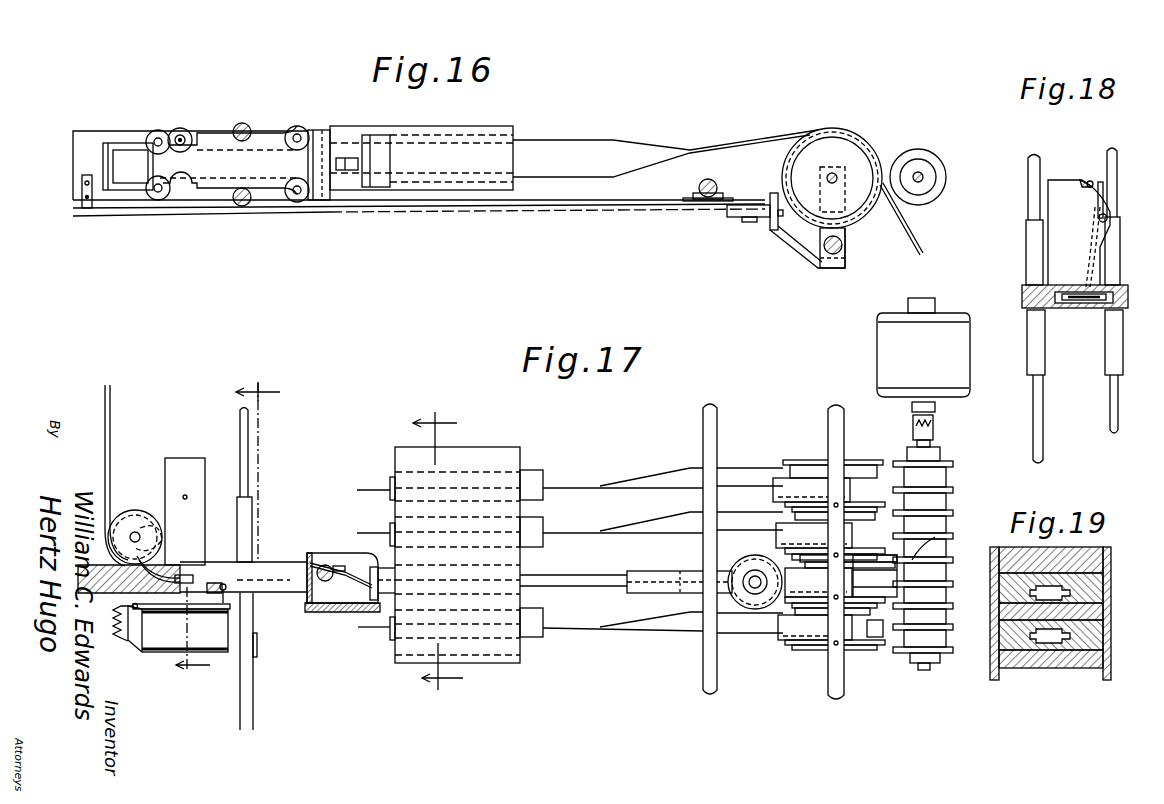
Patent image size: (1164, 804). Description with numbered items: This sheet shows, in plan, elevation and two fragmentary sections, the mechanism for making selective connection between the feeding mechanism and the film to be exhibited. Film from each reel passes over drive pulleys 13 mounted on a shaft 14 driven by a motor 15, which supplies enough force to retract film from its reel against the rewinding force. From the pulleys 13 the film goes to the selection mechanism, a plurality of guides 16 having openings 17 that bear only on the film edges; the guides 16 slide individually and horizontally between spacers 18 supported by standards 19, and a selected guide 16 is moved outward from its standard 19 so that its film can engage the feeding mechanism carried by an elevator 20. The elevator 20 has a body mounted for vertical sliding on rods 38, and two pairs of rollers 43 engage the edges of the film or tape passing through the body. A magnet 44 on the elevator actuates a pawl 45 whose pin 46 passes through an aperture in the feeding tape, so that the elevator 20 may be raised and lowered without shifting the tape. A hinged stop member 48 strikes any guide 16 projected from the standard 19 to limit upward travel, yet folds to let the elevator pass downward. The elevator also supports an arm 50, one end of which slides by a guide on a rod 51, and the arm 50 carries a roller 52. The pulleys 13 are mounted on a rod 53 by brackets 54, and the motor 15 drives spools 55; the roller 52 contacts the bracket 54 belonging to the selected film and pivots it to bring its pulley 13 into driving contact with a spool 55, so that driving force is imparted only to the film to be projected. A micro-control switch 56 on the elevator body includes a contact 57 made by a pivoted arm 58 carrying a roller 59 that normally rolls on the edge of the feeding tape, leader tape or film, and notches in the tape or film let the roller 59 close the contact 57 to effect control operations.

In FIG. 16, the drive pulley 13 is at (946, 180).
In FIG. 17, the drive pulley 13 is at (944, 477).
In FIG. 16, the shaft 14 is at (924, 173).
In FIG. 17, the shaft 14 is at (933, 443).
In FIG. 17, the motor 15 is at (962, 356).
In FIG. 19, the guide 16 is at (1105, 583).
In FIG. 17, the guide 16 is at (528, 482).
In FIG. 19, the opening 17 is at (1046, 586).
In FIG. 19, the spacer 18 is at (1090, 553).
In FIG. 17, the spacer 18 is at (241, 528).
In FIG. 19, the standard 19 is at (1108, 560).
In FIG. 17, the standard 19 is at (488, 681).
In FIG. 16, the elevator 20 is at (257, 210).
In FIG. 17, the elevator 20 is at (256, 517).
In FIG. 16, the rod 38 is at (246, 124).
In FIG. 17, the rod 38 is at (241, 430).
In FIG. 16, the roller 43 is at (158, 130).
In FIG. 17, the magnet 44 is at (178, 638).
In FIG. 16, the pawl 45 is at (301, 126).
In FIG. 17, the pawl 45 is at (165, 630).
In FIG. 17, the pin 46 is at (220, 606).
In FIG. 17, the hinged stop member 48 is at (337, 613).
In FIG. 16, the arm 50 is at (573, 204).
In FIG. 18, the arm 50 is at (1032, 293).
In FIG. 17, the arm 50 is at (640, 576).
In FIG. 16, the rod 51 is at (712, 180).
In FIG. 18, the rod 51 is at (1112, 418).
In FIG. 17, the rod 51 is at (710, 437).
In FIG. 16, the roller 52 is at (737, 219).
In FIG. 17, the roller 52 is at (757, 606).
In FIG. 16, the rod 53 is at (843, 249).
In FIG. 17, the rod 53 is at (838, 407).
In FIG. 16, the bracket 54 is at (812, 255).
In FIG. 17, the bracket 54 is at (788, 478).
In FIG. 16, the spool 55 is at (858, 136).
In FIG. 17, the spool 55 is at (870, 460).
In FIG. 18, the micro-control switch 56 is at (1065, 182).
In FIG. 17, the micro-control switch 56 is at (170, 470).
In FIG. 18, the contact 57 is at (1095, 176).
In FIG. 18, the pivoted arm 58 is at (1105, 200).
In FIG. 16, the roller 59 is at (188, 133).
In FIG. 18, the roller 59 is at (1093, 310).